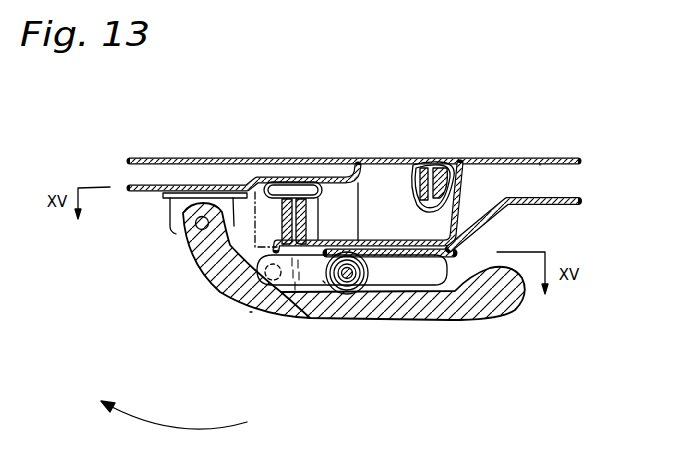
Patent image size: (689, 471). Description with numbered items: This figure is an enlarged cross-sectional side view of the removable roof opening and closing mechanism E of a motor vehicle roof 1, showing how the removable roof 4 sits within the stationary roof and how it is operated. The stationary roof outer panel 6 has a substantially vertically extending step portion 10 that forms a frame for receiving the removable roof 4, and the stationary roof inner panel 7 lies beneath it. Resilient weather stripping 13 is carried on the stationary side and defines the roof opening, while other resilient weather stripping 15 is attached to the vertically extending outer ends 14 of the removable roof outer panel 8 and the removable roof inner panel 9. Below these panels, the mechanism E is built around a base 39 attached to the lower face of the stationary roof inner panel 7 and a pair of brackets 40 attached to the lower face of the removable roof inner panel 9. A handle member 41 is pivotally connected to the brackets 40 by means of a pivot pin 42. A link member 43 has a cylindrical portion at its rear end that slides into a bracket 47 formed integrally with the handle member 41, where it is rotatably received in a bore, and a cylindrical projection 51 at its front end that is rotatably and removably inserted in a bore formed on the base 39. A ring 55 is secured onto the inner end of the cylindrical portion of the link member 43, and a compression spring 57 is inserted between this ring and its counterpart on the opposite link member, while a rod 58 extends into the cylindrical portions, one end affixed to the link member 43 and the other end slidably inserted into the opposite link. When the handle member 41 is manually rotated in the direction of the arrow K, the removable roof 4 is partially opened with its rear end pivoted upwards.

The vehicle door assembly 1 is at (360, 134).
The removable roof 4 is at (354, 134).
The stationary roof outer panel 6 is at (575, 158).
The stationary roof inner panel 7 is at (560, 204).
The removable roof outer panel 8 is at (259, 157).
The removable roof inner panel 9 is at (151, 192).
The step portion 10 is at (462, 158).
The weather stripping 13 is at (306, 202).
The outer ends 14 is at (417, 168).
The weather stripping 15 is at (447, 158).
The base 39 is at (448, 254).
The brackets 40 is at (178, 214).
The handle member 41 is at (349, 281).
The pivot pin 42 is at (194, 270).
The link member 43 is at (292, 291).
The bracket 47 is at (323, 281).
The cylindrical projection 51 is at (252, 312).
The ring 55 is at (378, 281).
The compression spring 57 is at (362, 289).
The rod 58 is at (345, 284).
The removable roof opening and closing mechanism E is at (349, 286).
The arrow K is at (176, 433).